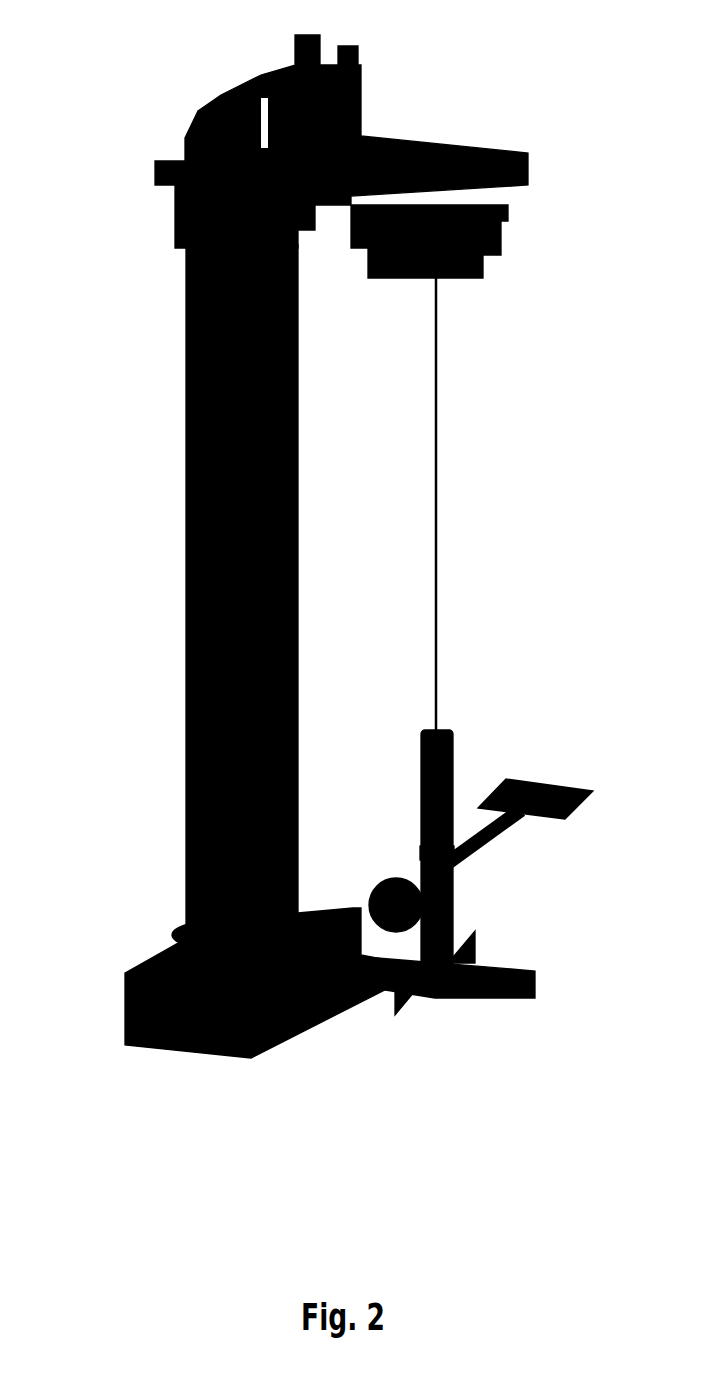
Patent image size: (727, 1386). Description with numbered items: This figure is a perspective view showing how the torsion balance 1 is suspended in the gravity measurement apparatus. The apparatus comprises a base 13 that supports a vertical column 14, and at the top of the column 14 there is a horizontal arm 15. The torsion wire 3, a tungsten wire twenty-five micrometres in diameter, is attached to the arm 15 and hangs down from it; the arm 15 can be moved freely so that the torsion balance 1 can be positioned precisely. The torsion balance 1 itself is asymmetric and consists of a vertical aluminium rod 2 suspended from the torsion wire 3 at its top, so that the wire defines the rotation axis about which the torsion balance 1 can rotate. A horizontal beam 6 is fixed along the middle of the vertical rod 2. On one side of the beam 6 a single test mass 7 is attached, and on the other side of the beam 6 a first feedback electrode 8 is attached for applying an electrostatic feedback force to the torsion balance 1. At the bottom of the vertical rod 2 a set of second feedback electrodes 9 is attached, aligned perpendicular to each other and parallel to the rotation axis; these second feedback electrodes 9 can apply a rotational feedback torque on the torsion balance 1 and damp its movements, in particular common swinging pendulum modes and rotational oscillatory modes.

The torsion balance 1 is at (392, 770).
The vertical aluminium rod 2 is at (424, 845).
The torsion wire 3 is at (430, 487).
The horizontal beam 6 is at (480, 836).
The test mass 7 is at (376, 893).
The first feedback electrode 8 is at (527, 790).
The second feedback electrodes 9 is at (400, 990).
The base 13 is at (131, 1011).
The vertical column 14 is at (196, 560).
The horizontal arm 15 is at (432, 163).